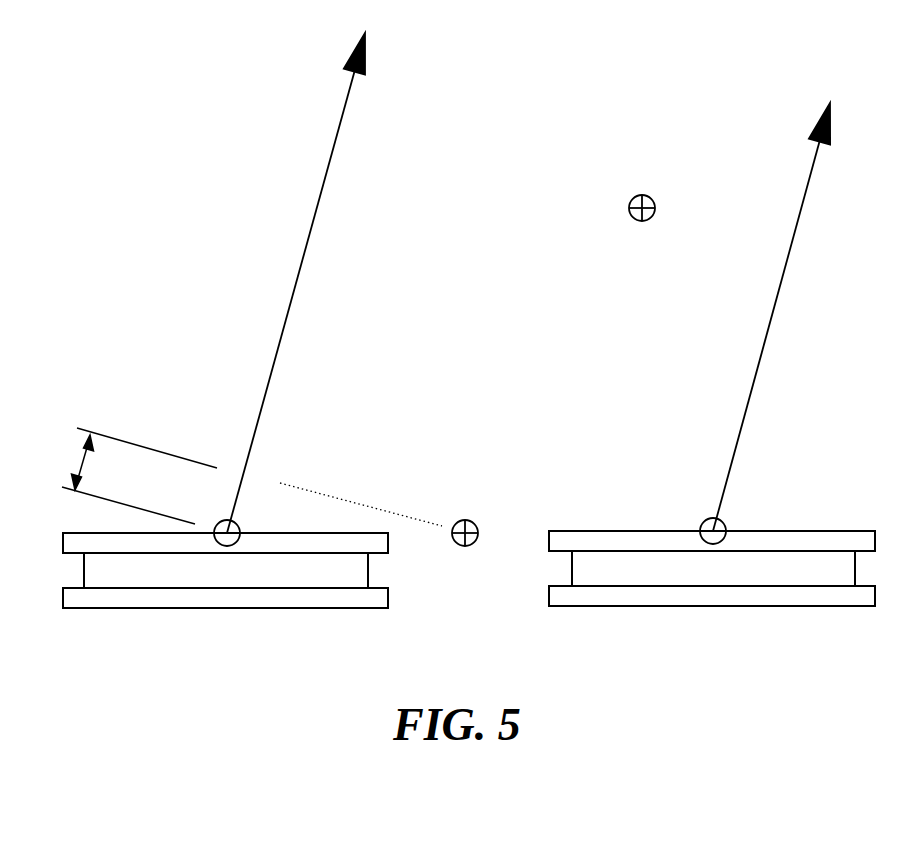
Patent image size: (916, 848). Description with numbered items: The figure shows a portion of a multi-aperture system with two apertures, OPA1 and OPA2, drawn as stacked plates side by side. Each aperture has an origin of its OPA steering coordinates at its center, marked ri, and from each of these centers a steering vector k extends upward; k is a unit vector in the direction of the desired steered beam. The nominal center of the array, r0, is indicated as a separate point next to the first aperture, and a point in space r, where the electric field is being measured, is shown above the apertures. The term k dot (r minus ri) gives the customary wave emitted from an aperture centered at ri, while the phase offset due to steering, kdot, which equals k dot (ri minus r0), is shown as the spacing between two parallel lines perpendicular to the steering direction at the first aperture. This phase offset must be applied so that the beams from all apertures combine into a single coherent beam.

The first optical phased array aperture OPA1 is at (225, 570).
The second optical phased array aperture OPA2 is at (712, 568).
The steering vector k is at (532, 281).
The center of the i-th aperture ri is at (521, 512).
The nominal center of the array r0 is at (379, 535).
The point in space r is at (642, 225).
The phase offset due to steering kdot is at (135, 458).